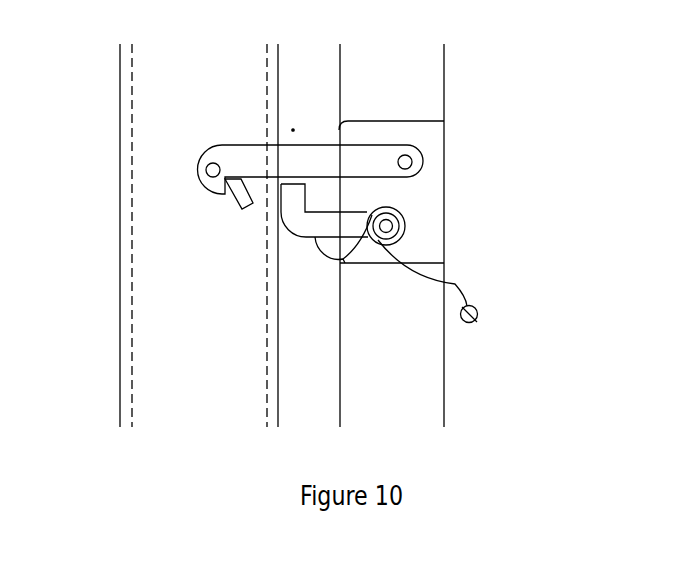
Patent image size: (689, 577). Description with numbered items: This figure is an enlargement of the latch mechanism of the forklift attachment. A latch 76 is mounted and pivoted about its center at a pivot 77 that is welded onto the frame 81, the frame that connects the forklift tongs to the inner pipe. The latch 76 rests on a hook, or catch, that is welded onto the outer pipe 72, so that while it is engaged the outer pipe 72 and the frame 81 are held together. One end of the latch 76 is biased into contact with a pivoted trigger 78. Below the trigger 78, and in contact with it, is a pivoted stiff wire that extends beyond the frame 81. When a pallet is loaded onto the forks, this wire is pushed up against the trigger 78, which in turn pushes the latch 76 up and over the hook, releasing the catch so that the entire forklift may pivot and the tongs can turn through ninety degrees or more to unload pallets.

The outer pipe 72 is at (121, 344).
The latch 76 is at (255, 152).
The pivot 77 is at (422, 163).
The pivoted trigger 78 is at (320, 220).
The frame 81 is at (428, 370).